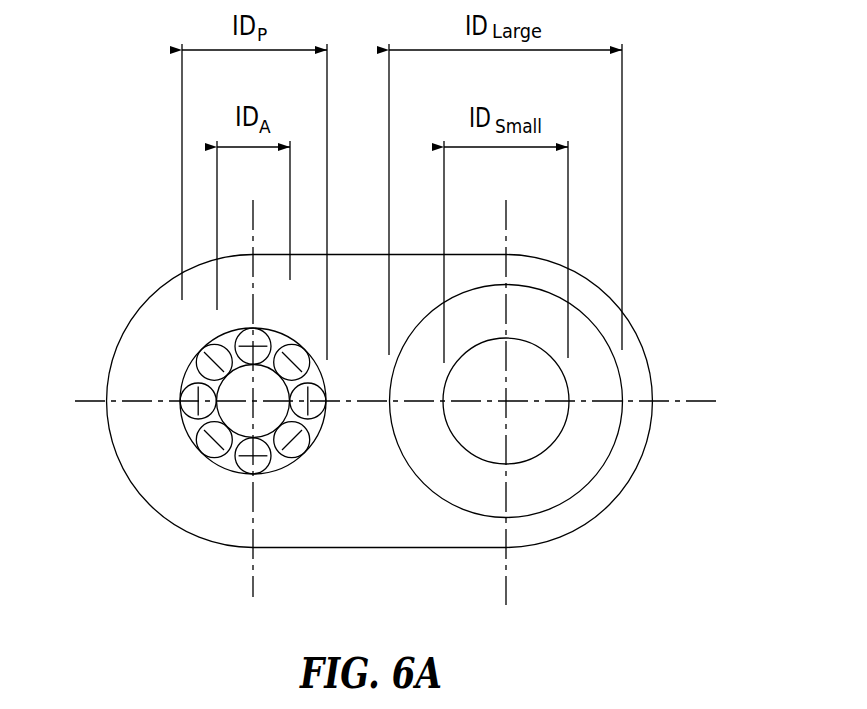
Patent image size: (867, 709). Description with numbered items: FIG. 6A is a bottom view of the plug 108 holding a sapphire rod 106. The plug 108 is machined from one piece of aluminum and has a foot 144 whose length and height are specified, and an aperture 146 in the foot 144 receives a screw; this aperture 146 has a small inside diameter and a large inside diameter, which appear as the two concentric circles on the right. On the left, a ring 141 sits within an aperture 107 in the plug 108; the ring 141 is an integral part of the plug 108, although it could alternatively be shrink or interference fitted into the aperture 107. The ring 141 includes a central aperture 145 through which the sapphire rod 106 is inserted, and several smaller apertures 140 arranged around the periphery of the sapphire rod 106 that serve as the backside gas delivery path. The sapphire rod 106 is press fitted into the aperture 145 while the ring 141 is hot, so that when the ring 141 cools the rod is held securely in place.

The sapphire rod 106 is at (263, 420).
The aperture 107 is at (183, 432).
The plug 108 is at (705, 250).
The smaller apertures 140 is at (228, 332).
The ring 141 is at (228, 462).
The foot 144 is at (644, 351).
The aperture 145 is at (272, 358).
The aperture 146 is at (538, 437).